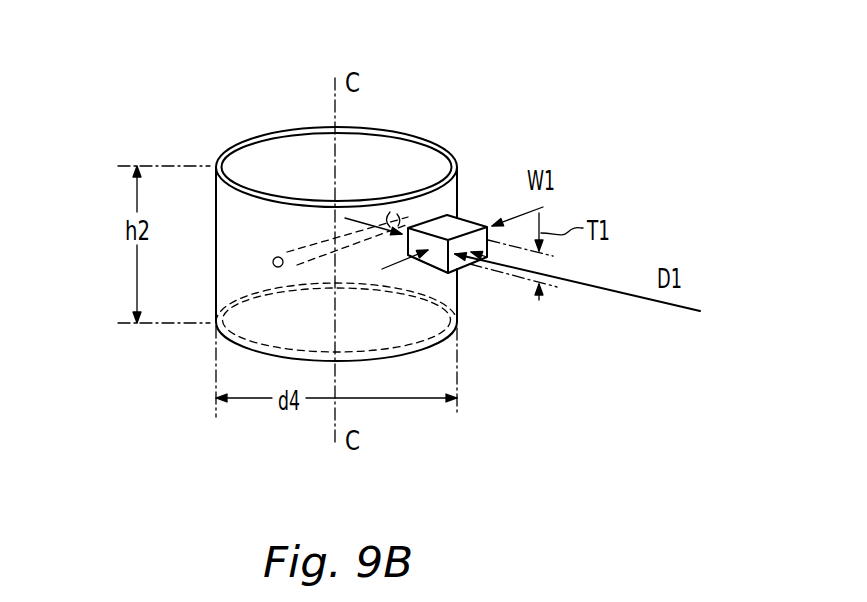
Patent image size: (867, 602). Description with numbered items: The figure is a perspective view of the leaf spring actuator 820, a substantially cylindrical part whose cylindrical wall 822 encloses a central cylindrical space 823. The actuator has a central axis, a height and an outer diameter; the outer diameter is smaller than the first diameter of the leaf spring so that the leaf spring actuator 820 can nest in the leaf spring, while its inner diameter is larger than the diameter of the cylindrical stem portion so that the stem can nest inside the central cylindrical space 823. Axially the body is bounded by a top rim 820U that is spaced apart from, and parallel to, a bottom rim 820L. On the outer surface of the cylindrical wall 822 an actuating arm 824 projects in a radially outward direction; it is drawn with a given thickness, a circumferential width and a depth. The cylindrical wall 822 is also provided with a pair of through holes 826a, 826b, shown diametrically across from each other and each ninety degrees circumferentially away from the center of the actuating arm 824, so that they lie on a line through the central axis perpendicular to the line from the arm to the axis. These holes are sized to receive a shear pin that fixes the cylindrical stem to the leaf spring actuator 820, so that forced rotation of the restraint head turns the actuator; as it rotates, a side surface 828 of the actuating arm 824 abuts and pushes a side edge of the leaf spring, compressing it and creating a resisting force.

The leaf spring actuator 820 is at (548, 128).
The top rim 820U is at (263, 134).
The bottom rim 820L is at (245, 347).
The cylindrical wall 822 is at (220, 220).
The central cylindrical space 823 is at (292, 152).
The actuating arm 824 is at (473, 262).
The through hole 826a is at (273, 263).
The through hole 826b is at (416, 210).
The side surface 828 is at (436, 254).